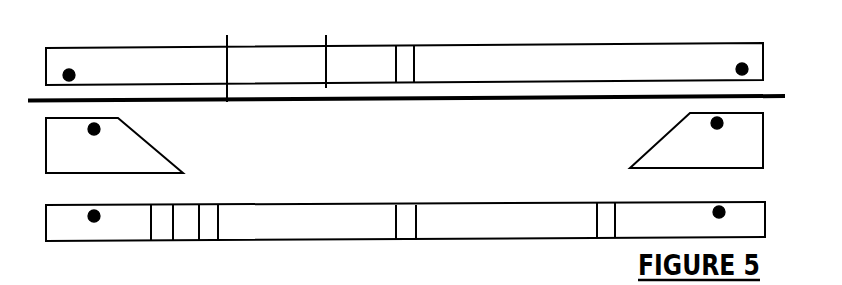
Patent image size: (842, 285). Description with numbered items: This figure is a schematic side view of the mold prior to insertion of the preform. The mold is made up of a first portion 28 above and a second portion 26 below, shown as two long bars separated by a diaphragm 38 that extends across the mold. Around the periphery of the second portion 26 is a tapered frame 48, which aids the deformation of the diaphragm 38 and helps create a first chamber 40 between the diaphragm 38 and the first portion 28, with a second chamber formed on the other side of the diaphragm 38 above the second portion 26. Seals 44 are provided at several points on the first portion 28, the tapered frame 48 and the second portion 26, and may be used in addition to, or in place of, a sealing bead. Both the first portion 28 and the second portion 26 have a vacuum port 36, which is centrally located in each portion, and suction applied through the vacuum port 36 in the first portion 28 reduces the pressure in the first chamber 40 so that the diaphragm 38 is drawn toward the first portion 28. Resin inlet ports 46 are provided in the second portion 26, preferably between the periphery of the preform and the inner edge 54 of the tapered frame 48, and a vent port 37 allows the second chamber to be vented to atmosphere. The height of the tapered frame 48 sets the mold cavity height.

The second portion 26 is at (97, 232).
The first portion 28 is at (542, 57).
The vacuum ports 36 is at (403, 57).
The vent port 37 is at (159, 230).
The diaphragm 38 is at (228, 55).
The first chamber 40 is at (324, 48).
The seals 44 is at (94, 129).
The resin inlet ports 46 is at (207, 230).
The tapered frame 48 is at (677, 153).
The inner edge 54 is at (147, 139).